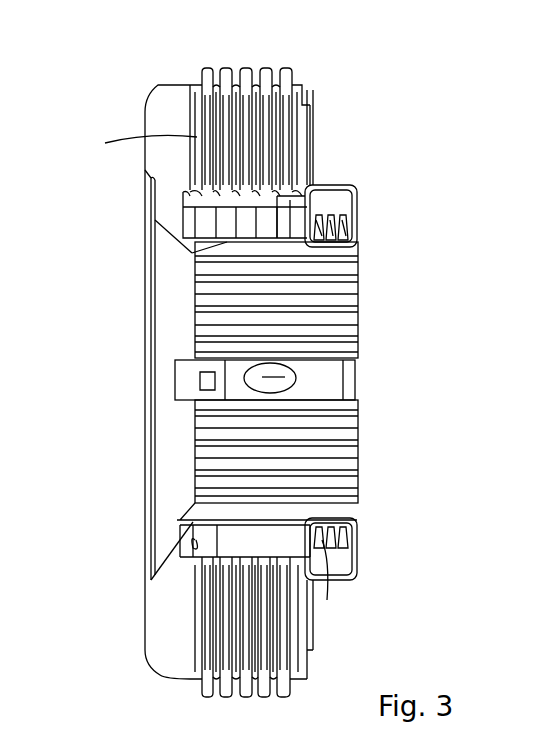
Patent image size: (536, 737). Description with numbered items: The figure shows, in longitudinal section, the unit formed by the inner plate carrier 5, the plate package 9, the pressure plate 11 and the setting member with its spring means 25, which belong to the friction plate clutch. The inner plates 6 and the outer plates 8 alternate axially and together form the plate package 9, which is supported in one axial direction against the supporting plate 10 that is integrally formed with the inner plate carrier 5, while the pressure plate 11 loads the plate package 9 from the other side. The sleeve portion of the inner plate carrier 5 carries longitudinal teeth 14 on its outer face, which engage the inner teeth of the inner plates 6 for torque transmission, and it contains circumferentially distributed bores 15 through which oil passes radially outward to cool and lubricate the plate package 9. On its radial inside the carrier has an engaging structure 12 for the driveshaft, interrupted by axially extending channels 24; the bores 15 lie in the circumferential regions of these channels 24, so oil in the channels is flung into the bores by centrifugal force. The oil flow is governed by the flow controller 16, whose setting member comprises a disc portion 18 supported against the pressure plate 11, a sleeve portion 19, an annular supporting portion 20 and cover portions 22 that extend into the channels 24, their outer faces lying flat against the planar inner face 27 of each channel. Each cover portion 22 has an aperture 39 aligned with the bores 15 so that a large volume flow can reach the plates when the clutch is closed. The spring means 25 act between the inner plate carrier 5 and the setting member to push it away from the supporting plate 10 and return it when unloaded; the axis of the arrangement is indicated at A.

The inner plate carrier 5 is at (370, 475).
The inner plates 6 is at (148, 141).
The outer plates 8 is at (280, 76).
The plate package 9 is at (225, 58).
The supporting plate 10 is at (166, 115).
The pressure plate 11 is at (300, 88).
The engaging structure 12 is at (345, 300).
The longitudinal teeth 14 is at (190, 200).
The bores 15 is at (290, 172).
The flow controller 16 is at (362, 203).
The disc portion 18 is at (312, 633).
The sleeve portion 19 is at (330, 188).
The annular supporting portion 20 is at (340, 572).
The cover portions 22 is at (225, 262).
The channels 24 is at (200, 380).
The spring means 25 is at (327, 565).
The inner face 27 is at (195, 251).
The aperture 39 is at (265, 386).
The axis A is at (452, 338).